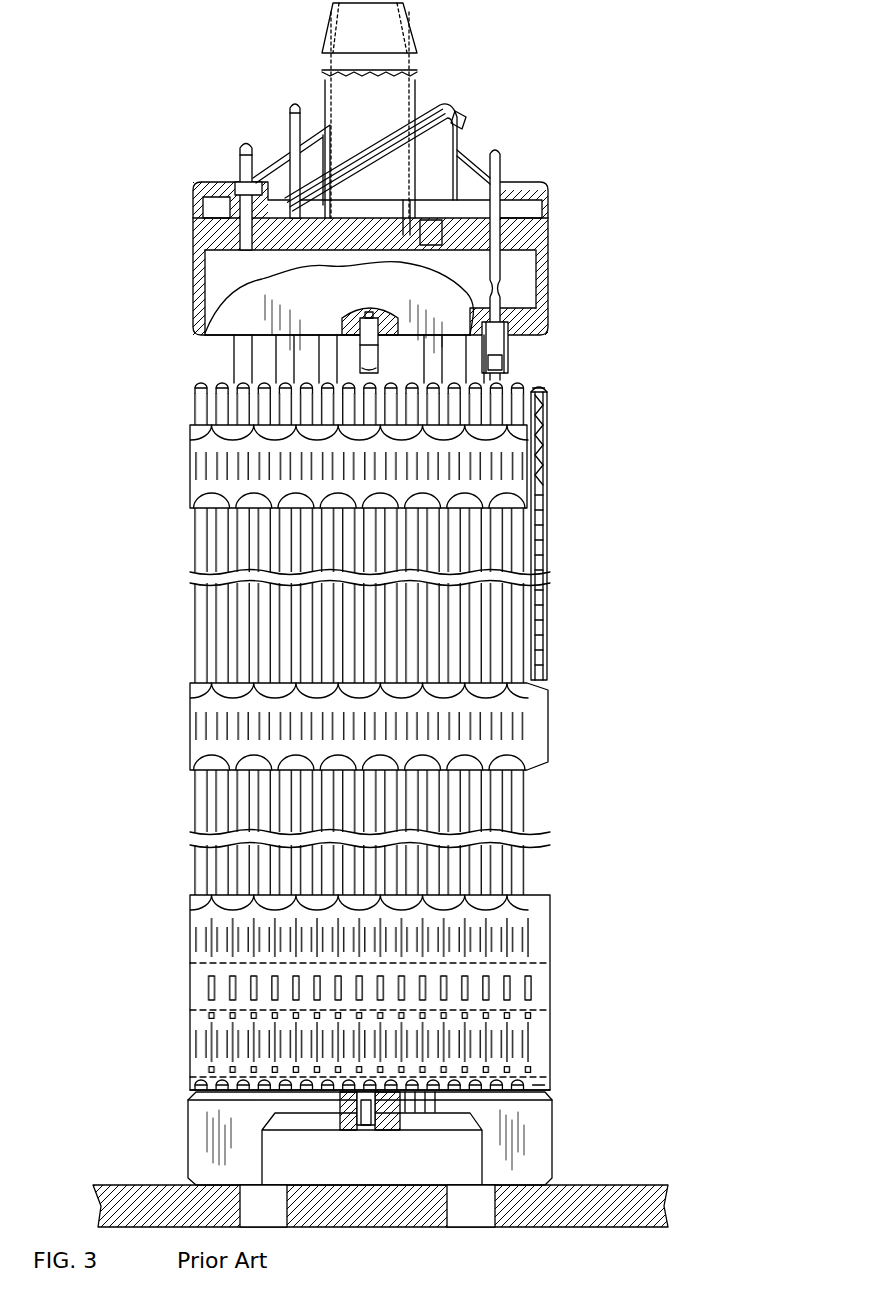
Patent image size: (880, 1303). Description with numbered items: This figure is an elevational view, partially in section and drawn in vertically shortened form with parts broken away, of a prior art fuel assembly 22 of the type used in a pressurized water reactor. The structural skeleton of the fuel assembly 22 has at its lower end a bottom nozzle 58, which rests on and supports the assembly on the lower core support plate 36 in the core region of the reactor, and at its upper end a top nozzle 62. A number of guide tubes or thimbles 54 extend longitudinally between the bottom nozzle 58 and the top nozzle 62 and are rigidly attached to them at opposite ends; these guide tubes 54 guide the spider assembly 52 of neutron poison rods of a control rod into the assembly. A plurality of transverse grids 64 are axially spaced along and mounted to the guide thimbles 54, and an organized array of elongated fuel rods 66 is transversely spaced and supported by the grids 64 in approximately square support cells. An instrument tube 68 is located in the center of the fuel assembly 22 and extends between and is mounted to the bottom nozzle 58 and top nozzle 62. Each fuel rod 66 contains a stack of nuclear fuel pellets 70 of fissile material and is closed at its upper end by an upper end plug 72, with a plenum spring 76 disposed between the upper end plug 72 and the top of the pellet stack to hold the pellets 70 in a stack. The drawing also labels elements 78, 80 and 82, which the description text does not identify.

The fuel assembly 22 is at (632, 248).
The lower core support plate 36 is at (590, 1185).
The spider assembly 52 is at (272, 190).
The guide tubes 54 is at (235, 367).
The bottom nozzle 58 is at (558, 1135).
The top nozzle 62 is at (552, 236).
The transverse grids 64 is at (190, 479).
The fuel rods 66 is at (190, 640).
The instrument tube 68 is at (375, 1124).
The nuclear fuel pellets 70 is at (540, 544).
The upper end plug 72 is at (548, 390).
The plenum spring 76 is at (548, 450).
The nut / sleeve 78 is at (520, 306).
The bent tube / vent line 80 is at (465, 106).
The inlet pipe 82 is at (420, 92).